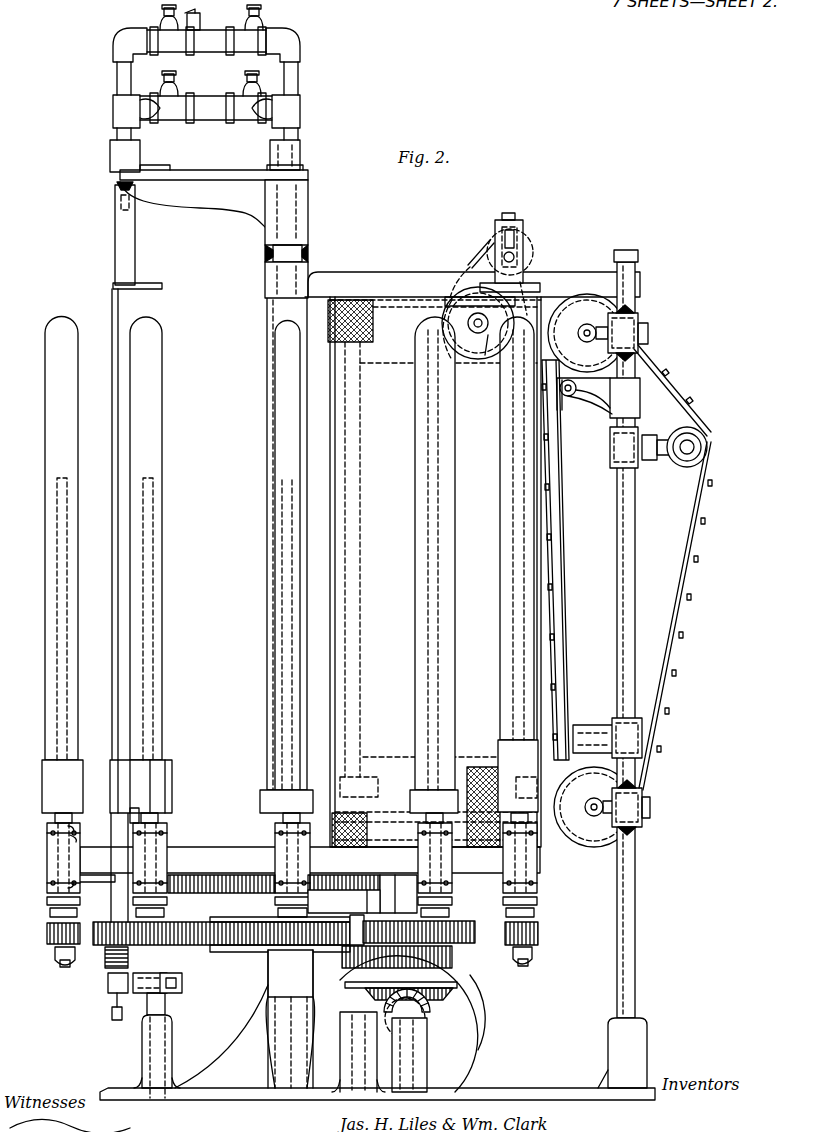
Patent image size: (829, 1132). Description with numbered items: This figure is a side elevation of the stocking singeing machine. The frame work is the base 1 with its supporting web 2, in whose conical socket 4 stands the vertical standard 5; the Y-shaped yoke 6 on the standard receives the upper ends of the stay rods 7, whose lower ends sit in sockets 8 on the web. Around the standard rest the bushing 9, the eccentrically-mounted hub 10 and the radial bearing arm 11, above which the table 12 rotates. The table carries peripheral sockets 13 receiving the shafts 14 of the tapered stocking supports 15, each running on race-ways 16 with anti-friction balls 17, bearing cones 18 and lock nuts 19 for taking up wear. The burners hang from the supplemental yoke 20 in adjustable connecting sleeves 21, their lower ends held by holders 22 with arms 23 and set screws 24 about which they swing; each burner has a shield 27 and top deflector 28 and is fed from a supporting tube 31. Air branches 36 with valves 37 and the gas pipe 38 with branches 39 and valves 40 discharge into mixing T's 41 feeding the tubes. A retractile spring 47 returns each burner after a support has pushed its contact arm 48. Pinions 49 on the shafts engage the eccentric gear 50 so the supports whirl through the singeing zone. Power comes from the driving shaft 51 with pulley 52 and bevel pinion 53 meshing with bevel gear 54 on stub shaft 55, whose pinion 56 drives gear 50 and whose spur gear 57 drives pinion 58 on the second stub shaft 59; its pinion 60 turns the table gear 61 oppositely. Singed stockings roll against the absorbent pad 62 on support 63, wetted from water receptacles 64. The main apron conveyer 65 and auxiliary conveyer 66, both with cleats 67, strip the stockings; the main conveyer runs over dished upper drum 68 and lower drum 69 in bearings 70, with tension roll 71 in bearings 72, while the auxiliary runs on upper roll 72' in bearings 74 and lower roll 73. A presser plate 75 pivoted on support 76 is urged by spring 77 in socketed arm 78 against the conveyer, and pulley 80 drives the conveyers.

The base 1 is at (377, 1107).
The supporting web 2 is at (402, 1056).
The conical supporting socket 4 is at (268, 1006).
The standard 5 is at (270, 257).
The Y-shaped yoke 6 is at (395, 285).
The stay rods 7 is at (635, 896).
The socket 8 is at (647, 1034).
The bushing 9 is at (268, 978).
The eccentrically-mounted hub 10 is at (242, 917).
The bearing arm 11 is at (392, 890).
The table 12 is at (190, 847).
The socket 13 is at (47, 858).
The shaft 14 is at (50, 912).
The stocking support or form 15 is at (50, 558).
The race-way 16 is at (78, 838).
The anti-friction balls 17 is at (47, 832).
The bearing cone 18 is at (78, 826).
The lock nuts 19 is at (47, 902).
The supplemental Y-shaped yoke 20 is at (212, 182).
The adjustable connecting sleeves 21 is at (110, 156).
The vertically-adjustable holder 22 is at (160, 973).
The laterally-adjustable arm 23 is at (108, 990).
The set screw 24 is at (112, 1014).
The shield 27 is at (120, 306).
The deflector 28 is at (155, 283).
The supporting tube 31 is at (115, 252).
The air pipe branches 36 is at (186, 120).
The controlling valve 37 is at (243, 87).
The gas supply pipe 38 is at (199, 17).
The gas pipe branches 39 is at (190, 52).
The controlling valve 40 is at (168, 24).
The mixing T 41 is at (113, 112).
The retractile spring 47 is at (108, 966).
The contact arm 48 is at (136, 813).
The pinion 49 is at (47, 940).
The gear 50 is at (100, 922).
The driving shaft 51 is at (430, 1008).
The driving pulley 52 is at (488, 1014).
The bevel pinion 53 is at (427, 1022).
The bevel gear 54 is at (460, 988).
The stub shaft 55 is at (378, 1050).
The pinion 56 is at (477, 934).
The spur gear 57 is at (452, 960).
The pinion 58 is at (354, 952).
The second stub shaft 59 is at (330, 958).
The pinion 60 is at (362, 875).
The gear 61 is at (236, 875).
The absorbent pad 62 is at (435, 572).
The support 63 is at (392, 322).
The water receptacles 64 is at (396, 368).
The main apron conveyer 65 is at (692, 560).
The auxiliary apron conveyer 66 is at (468, 258).
The cleats 67 is at (697, 525).
The upper drum 68 is at (587, 333).
The lower drum 69 is at (594, 807).
The bearings 70 is at (645, 313).
The tension roll 71 is at (708, 450).
The bearings 72 is at (642, 460).
The upper roll 72' is at (528, 271).
The lower roll 73 is at (480, 352).
The adjustable bearings 74 is at (495, 236).
The presser plate 75 is at (570, 614).
The support 76 is at (596, 398).
The spring 77 is at (576, 728).
The socketed supporting arm 78 is at (642, 748).
The pulley 80 is at (492, 360).